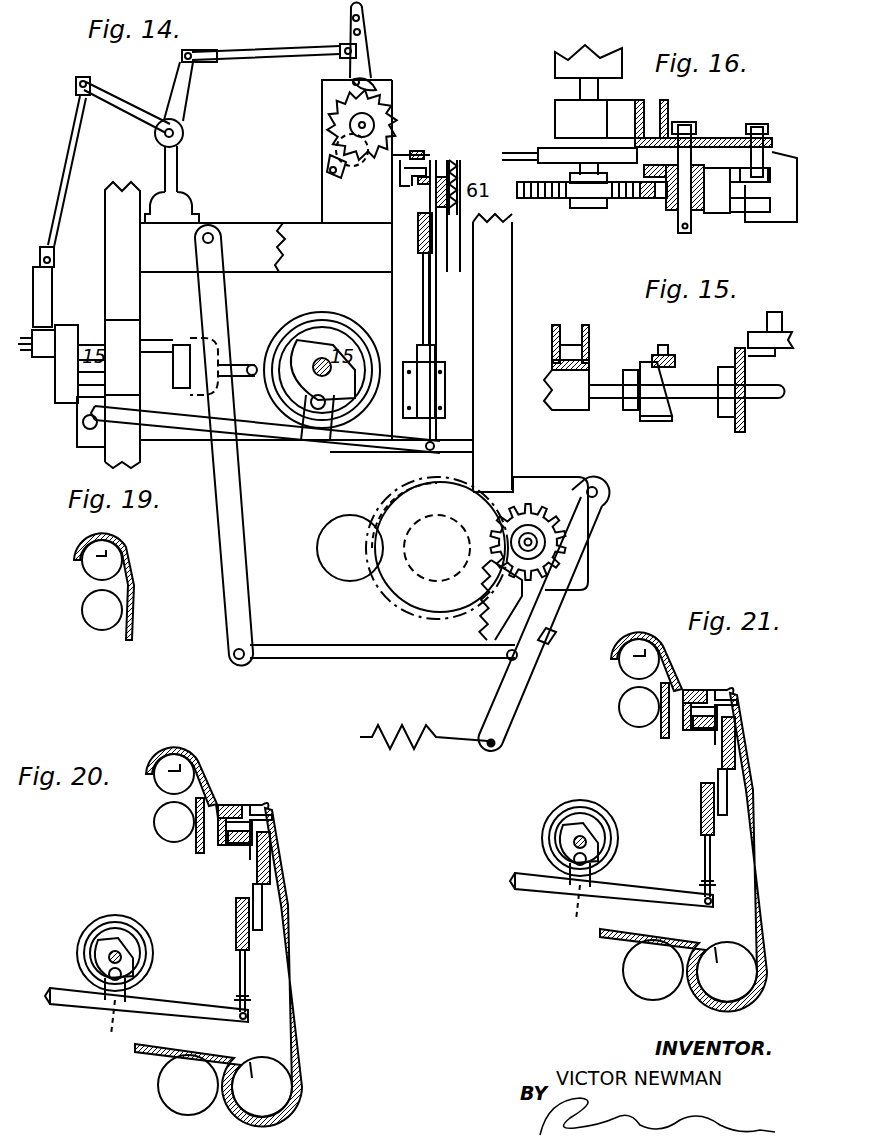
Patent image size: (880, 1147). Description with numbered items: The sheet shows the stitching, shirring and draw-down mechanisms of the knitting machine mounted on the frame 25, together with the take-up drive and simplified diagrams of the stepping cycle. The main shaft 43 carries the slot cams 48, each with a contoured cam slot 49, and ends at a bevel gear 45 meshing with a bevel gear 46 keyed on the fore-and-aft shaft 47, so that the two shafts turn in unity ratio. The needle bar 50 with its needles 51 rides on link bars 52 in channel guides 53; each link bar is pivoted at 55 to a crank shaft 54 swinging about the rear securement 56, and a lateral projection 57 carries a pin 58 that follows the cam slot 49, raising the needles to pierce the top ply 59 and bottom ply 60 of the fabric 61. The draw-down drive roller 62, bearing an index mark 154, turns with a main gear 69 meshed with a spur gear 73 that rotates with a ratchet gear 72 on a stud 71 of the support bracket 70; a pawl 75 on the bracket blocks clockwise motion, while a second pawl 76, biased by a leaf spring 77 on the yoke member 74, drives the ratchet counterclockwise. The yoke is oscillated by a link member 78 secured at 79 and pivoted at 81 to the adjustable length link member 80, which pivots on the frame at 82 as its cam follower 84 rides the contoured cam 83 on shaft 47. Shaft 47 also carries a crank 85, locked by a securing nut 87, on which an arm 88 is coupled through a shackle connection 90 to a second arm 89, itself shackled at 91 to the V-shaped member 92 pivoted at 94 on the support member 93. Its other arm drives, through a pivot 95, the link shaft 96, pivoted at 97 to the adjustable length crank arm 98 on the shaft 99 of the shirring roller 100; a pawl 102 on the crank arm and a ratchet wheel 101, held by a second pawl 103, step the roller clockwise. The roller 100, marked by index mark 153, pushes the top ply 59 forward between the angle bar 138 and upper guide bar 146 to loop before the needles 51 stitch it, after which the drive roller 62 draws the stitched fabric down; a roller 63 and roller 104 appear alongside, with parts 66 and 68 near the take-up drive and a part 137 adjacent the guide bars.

In FIG. 14, the frame 25 is at (122, 190).
In FIG. 16, the frame 25 is at (641, 106).
In FIG. 15, the frame 25 is at (571, 334).
In FIG. 14, the shaft 43 is at (320, 358).
In FIG. 15, the shaft 43 is at (779, 328).
In FIG. 20, the shaft 43 is at (122, 956).
In FIG. 21, the shaft 43 is at (587, 841).
In FIG. 15, the bevel gear 45 is at (748, 343).
In FIG. 15, the bevel gear 46 is at (745, 414).
In FIG. 14, the shaft 47 is at (251, 351).
In FIG. 15, the shaft 47 is at (699, 400).
In FIG. 14, the slot cam 48 is at (345, 320).
In FIG. 20, the slot cam 48 is at (78, 950).
In FIG. 21, the slot cam 48 is at (538, 850).
In FIG. 14, the cam slot 49 is at (370, 320).
In FIG. 20, the cam slot 49 is at (112, 929).
In FIG. 21, the cam slot 49 is at (567, 816).
In FIG. 14, the needle bar 50 is at (413, 300).
In FIG. 14, the needles 51 is at (404, 222).
In FIG. 20, the needles 51 is at (235, 937).
In FIG. 21, the needles 51 is at (699, 801).
In FIG. 14, the link bars 52 is at (423, 308).
In FIG. 20, the link bars 52 is at (239, 989).
In FIG. 21, the link bars 52 is at (704, 871).
In FIG. 14, the channel guides 53 is at (442, 401).
In FIG. 14, the crank shaft 54 is at (266, 445).
In FIG. 20, the crank shaft 54 is at (78, 1005).
In FIG. 21, the crank shaft 54 is at (546, 895).
In FIG. 14, the pivotal connection 55 is at (446, 447).
In FIG. 14, the pivotal securement 56 is at (82, 430).
In FIG. 14, the crank shaft lateral projection 57 is at (318, 406).
In FIG. 20, the pin 58 is at (103, 1026).
In FIG. 21, the pin 58 is at (568, 907).
In FIG. 14, the top ply 59 is at (396, 150).
In FIG. 20, the top ply 59 is at (205, 804).
In FIG. 14, the bottom ply 60 is at (402, 192).
In FIG. 14, the fabric 61 is at (457, 200).
In FIG. 19, the fabric 61 is at (136, 582).
In FIG. 20, the fabric 61 is at (298, 961).
In FIG. 21, the fabric 61 is at (753, 813).
In FIG. 14, the drive roller 62 is at (395, 495).
In FIG. 16, the drive roller 62 is at (555, 66).
In FIG. 20, the drive roller 62 is at (250, 1073).
In FIG. 21, the drive roller 62 is at (715, 958).
In FIG. 14, the roller 63 is at (338, 538).
In FIG. 20, the roller 63 is at (173, 1091).
In FIG. 21, the roller 63 is at (638, 971).
In FIG. 14, the plate 66 is at (406, 600).
In FIG. 16, the plate 66 is at (548, 148).
In FIG. 16, the plate 68 is at (505, 153).
In FIG. 14, the main gear 69 is at (425, 618).
In FIG. 16, the main gear 69 is at (563, 200).
In FIG. 14, the support bracket 70 is at (548, 492).
In FIG. 16, the support bracket 70 is at (721, 138).
In FIG. 14, the stud 71 is at (545, 538).
In FIG. 16, the stud 71 is at (684, 128).
In FIG. 14, the ratchet gear 72 is at (560, 540).
In FIG. 16, the ratchet gear 72 is at (738, 214).
In FIG. 14, the spur gear 73 is at (548, 556).
In FIG. 16, the spur gear 73 is at (660, 194).
In FIG. 14, the yoke member 74 is at (510, 690).
In FIG. 16, the yoke member 74 is at (786, 224).
In FIG. 14, the pawl 75 is at (594, 487).
In FIG. 16, the pawl 75 is at (778, 149).
In FIG. 14, the second pawl 76 is at (504, 588).
In FIG. 14, the leaf spring 77 is at (542, 618).
In FIG. 14, the link member 78 is at (354, 661).
In FIG. 14, the securement 79 is at (520, 657).
In FIG. 14, the adjustable length link member 80 is at (230, 606).
In FIG. 15, the adjustable length link member 80 is at (646, 361).
In FIG. 14, the pivotal securement 81 is at (233, 658).
In FIG. 14, the pivot point 82 is at (215, 239).
In FIG. 14, the contoured cam 83 is at (196, 346).
In FIG. 15, the contoured cam 83 is at (655, 412).
In FIG. 14, the cam follower 84 is at (222, 390).
In FIG. 15, the cam follower 84 is at (679, 367).
In FIG. 14, the crank 85 is at (68, 334).
In FIG. 14, the securing nut 87 is at (22, 339).
In FIG. 14, the arm 88 is at (52, 284).
In FIG. 14, the second arm 89 is at (60, 183).
In FIG. 14, the shackle connection 90 is at (55, 255).
In FIG. 14, the shackle connection 91 is at (78, 88).
In FIG. 14, the V-shaped member 92 is at (182, 109).
In FIG. 14, the support member 93 is at (177, 171).
In FIG. 14, the pivot 94 is at (184, 139).
In FIG. 14, the pivot 95 is at (203, 69).
In FIG. 14, the link shaft 96 is at (276, 57).
In FIG. 14, the pivotal connection 97 is at (360, 51).
In FIG. 14, the adjustable length crank arm 98 is at (362, 25).
In FIG. 14, the shaft 99 is at (372, 120).
In FIG. 19, the roller 100 is at (92, 559).
In FIG. 20, the roller 100 is at (158, 784).
In FIG. 21, the roller 100 is at (628, 675).
In FIG. 14, the ratchet wheel 101 is at (336, 118).
In FIG. 14, the pawl 102 is at (376, 82).
In FIG. 14, the second pawl 103 is at (336, 165).
In FIG. 19, the roller 104 is at (92, 613).
In FIG. 20, the roller 104 is at (163, 830).
In FIG. 21, the roller 104 is at (628, 717).
In FIG. 20, the block 137 is at (250, 858).
In FIG. 21, the block 137 is at (714, 746).
In FIG. 20, the angle bar 138 is at (220, 847).
In FIG. 21, the angle bar 138 is at (688, 731).
In FIG. 20, the upper guide bar 146 is at (244, 808).
In FIG. 21, the upper guide bar 146 is at (703, 691).
In FIG. 19, the index mark 153 is at (112, 548).
In FIG. 20, the index mark 153 is at (183, 776).
In FIG. 21, the index mark 153 is at (648, 656).
In FIG. 20, the index mark 154 is at (272, 1072).
In FIG. 21, the index mark 154 is at (737, 957).